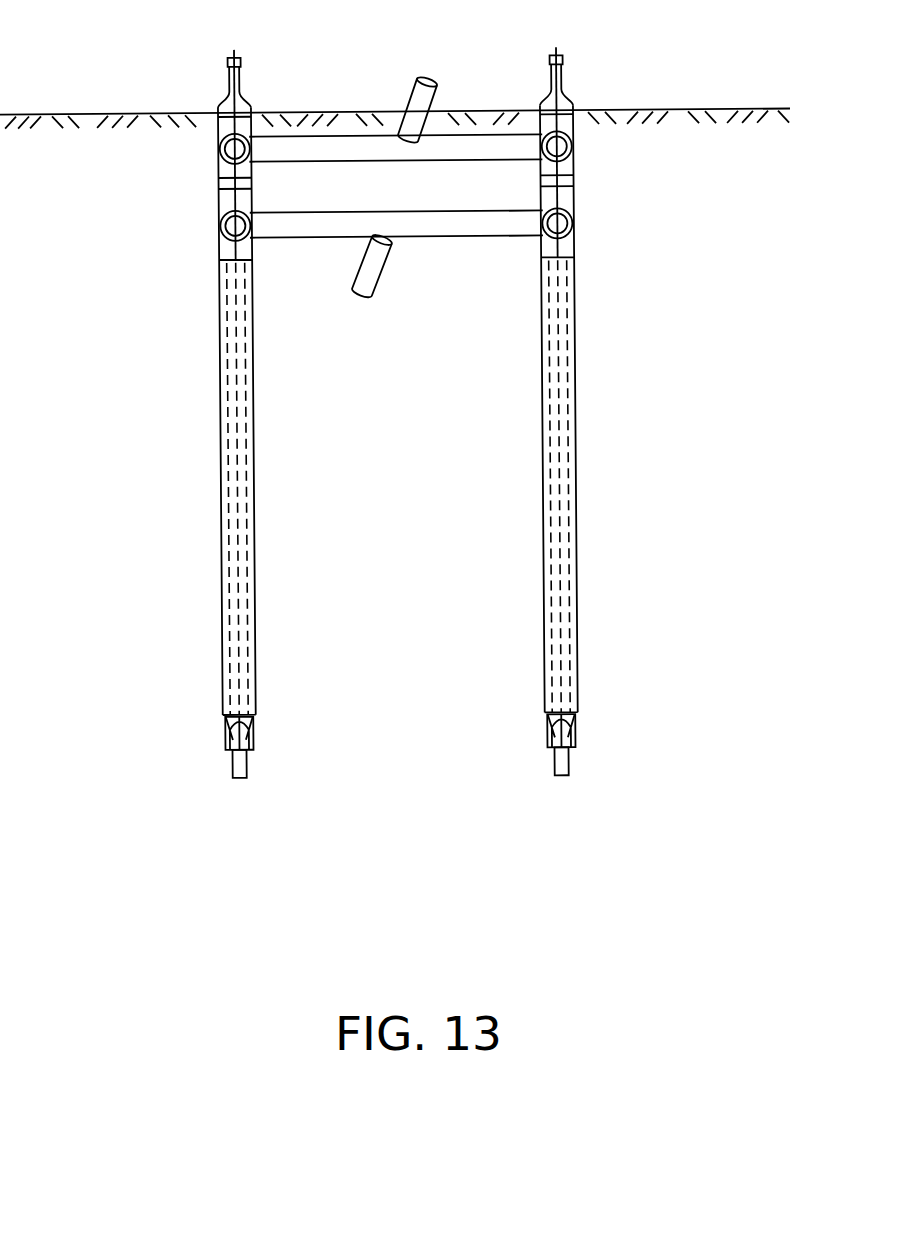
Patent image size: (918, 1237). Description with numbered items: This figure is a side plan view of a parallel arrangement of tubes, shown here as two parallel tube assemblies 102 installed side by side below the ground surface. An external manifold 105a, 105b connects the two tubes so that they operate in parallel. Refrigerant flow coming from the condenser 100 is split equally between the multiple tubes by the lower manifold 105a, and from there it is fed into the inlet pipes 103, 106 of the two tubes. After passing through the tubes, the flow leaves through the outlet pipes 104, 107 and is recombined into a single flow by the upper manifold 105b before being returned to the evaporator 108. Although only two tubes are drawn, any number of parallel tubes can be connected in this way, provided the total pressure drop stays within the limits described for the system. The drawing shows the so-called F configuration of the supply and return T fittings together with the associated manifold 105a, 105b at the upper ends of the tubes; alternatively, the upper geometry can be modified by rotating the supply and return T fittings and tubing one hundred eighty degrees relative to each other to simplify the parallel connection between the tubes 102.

The condenser 100 is at (356, 309).
The pile 102 is at (204, 604).
The inlet pipe 103 is at (222, 472).
The outlet pipe 104 is at (237, 430).
The manifold 105a is at (467, 240).
The manifold 105b is at (318, 137).
The inlet pipe 106 is at (575, 323).
The outlet pipe 107 is at (560, 403).
The evaporator 108 is at (428, 78).